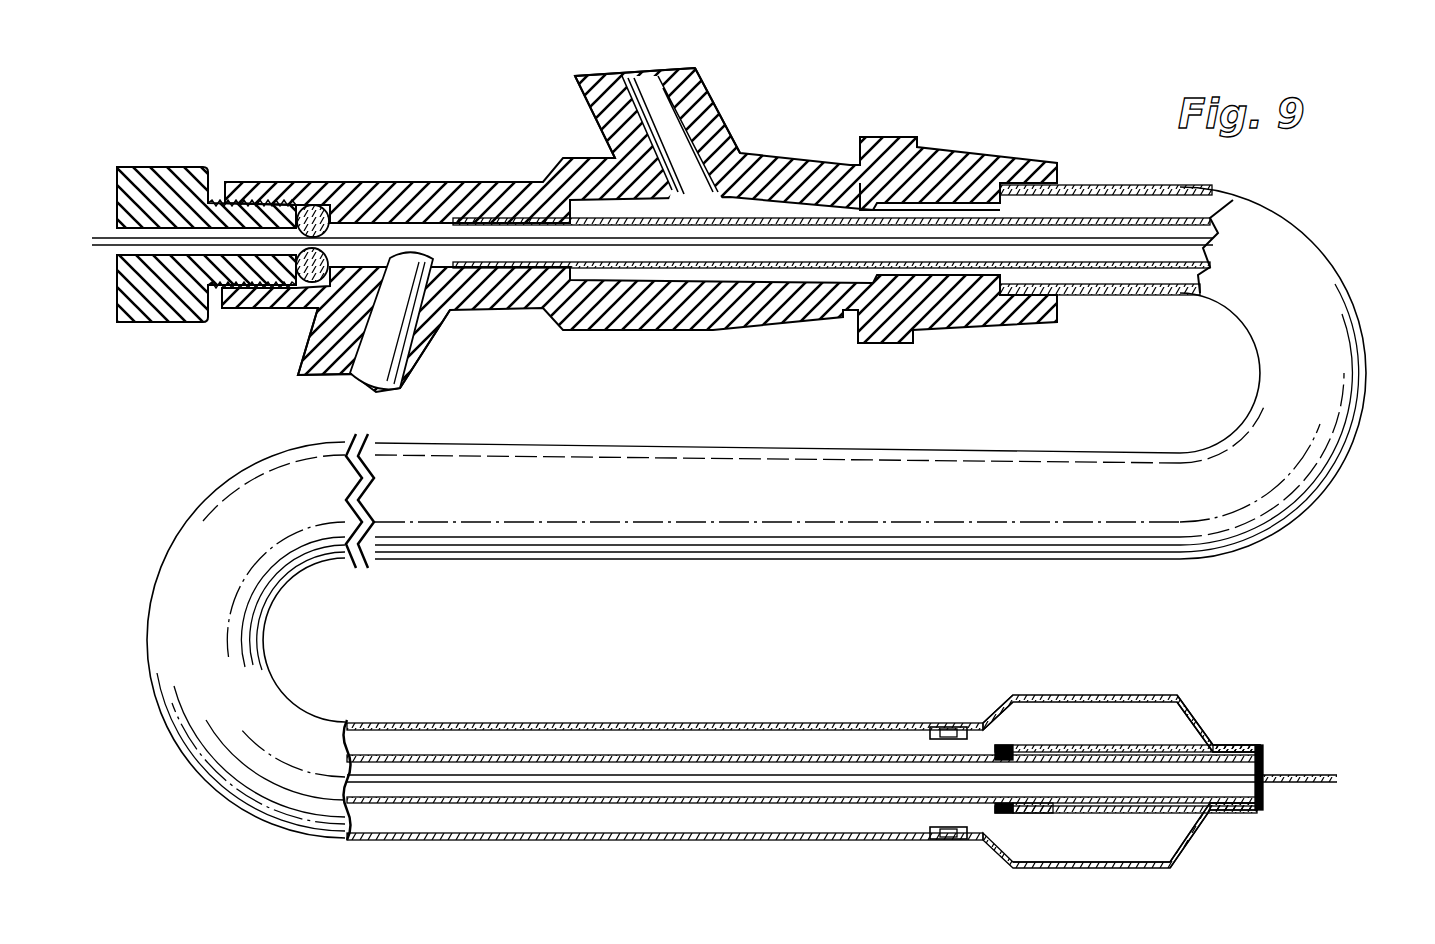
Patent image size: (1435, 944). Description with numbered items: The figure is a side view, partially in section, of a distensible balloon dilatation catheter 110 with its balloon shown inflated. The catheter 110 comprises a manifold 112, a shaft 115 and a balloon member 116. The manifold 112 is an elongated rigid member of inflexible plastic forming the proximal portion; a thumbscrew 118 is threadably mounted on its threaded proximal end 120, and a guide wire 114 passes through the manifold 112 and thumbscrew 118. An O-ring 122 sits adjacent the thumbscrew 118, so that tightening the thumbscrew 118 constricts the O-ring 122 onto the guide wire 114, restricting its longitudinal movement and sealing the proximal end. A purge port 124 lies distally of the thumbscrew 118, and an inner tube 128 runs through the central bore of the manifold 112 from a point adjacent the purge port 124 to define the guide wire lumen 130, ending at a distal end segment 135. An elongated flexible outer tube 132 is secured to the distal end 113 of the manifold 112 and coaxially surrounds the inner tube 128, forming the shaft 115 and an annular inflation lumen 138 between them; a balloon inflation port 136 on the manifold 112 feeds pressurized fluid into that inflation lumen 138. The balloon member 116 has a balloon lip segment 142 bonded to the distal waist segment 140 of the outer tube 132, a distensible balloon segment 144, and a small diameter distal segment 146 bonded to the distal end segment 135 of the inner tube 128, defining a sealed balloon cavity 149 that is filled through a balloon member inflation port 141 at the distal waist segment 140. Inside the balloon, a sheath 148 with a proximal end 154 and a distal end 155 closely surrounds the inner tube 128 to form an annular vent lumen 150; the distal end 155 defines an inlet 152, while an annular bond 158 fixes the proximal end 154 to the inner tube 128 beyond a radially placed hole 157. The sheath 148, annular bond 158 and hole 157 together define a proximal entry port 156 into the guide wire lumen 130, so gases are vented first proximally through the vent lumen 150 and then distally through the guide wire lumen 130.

The catheter 110 is at (1379, 325).
The manifold 112 is at (278, 161).
The distal end of manifold 113 is at (1005, 183).
The guide wire 114 is at (399, 236).
The shaft 115 is at (968, 447).
The balloon member 116 is at (1106, 694).
The thumbscrew 118 is at (153, 160).
The threaded proximal end 120 is at (237, 196).
The O-ring 122 is at (323, 205).
The purge port 124 is at (359, 379).
The inner tube 128 is at (780, 283).
The guide wire lumen 130 is at (733, 253).
The outer tube 132 is at (1162, 449).
The distal end segment 135 is at (1242, 750).
The balloon inflation port 136 is at (633, 88).
The annular inflation lumen 138 is at (396, 740).
The distal waist segment 140 is at (943, 727).
The balloon member inflation port 141 is at (952, 742).
The balloon lip segment 142 is at (945, 842).
The distensible balloon segment 144 is at (1116, 866).
The distal segment 146 is at (1228, 812).
The sheath 148 is at (1112, 747).
The balloon cavity 149 is at (1142, 851).
The annular vent lumen 150 is at (1090, 753).
The inlet 152 is at (1192, 832).
The proximal end of sheath 154 is at (1010, 746).
The distal end of sheath 155 is at (1190, 728).
The proximal entry port 156 is at (1034, 768).
The radially placed hole 157 is at (1038, 766).
The annular bond 158 is at (997, 807).